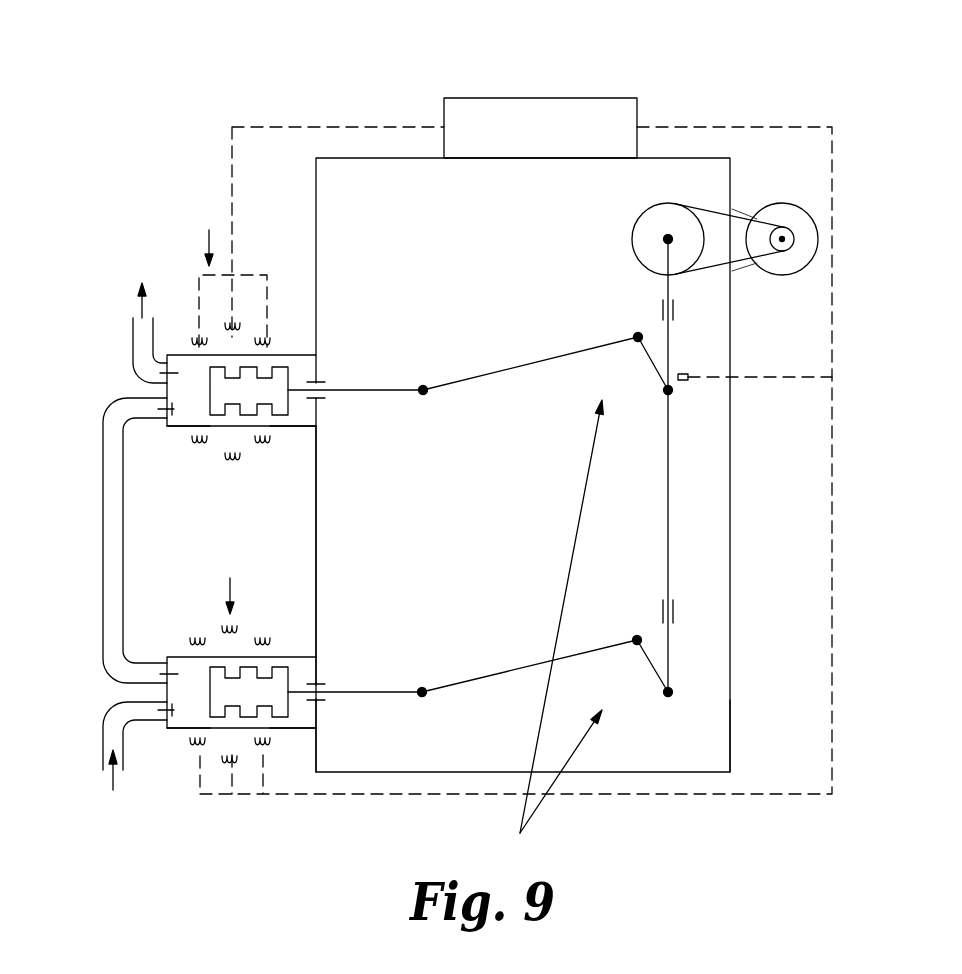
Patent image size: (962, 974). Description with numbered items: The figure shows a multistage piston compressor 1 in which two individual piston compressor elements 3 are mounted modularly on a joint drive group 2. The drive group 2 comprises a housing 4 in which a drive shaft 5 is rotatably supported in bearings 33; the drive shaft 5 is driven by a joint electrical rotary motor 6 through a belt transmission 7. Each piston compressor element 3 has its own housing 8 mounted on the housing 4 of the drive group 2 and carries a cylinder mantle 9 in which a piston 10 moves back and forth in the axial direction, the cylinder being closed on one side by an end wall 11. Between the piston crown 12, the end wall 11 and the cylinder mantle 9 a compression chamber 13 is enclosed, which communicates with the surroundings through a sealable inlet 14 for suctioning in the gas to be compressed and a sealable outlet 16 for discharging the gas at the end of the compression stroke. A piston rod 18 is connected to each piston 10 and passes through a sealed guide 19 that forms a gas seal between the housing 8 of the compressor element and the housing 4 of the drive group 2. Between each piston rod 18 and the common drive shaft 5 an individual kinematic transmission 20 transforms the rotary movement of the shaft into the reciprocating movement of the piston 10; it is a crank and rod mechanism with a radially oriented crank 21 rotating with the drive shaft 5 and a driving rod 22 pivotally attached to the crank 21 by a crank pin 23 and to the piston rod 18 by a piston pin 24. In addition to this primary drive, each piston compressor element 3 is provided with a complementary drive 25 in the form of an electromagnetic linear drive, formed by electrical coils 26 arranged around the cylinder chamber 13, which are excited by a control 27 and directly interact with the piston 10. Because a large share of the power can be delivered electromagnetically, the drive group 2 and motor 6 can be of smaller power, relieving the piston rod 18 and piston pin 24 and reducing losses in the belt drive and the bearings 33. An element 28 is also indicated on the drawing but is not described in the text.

The piston compressor 1 is at (792, 82).
The drive group 2 is at (738, 529).
The piston compressor element 3 is at (179, 342).
The housing 4 is at (732, 736).
The drive shaft 5 is at (690, 207).
The electrical rotary motor 6 is at (808, 255).
The belt transmission 7 is at (705, 267).
The housing 8 is at (178, 427).
The cylinder mantle 9 is at (285, 427).
The piston 10 is at (283, 365).
The end wall 11 is at (167, 393).
The piston crown 12 is at (167, 427).
The compression chamber 13 is at (192, 367).
The sealable inlet 14 is at (103, 740).
The sealable outlet 16 is at (133, 333).
The piston rod 18 is at (370, 390).
The sealed guide 19 is at (322, 383).
The kinematic transmission 20 is at (549, 632).
The crank 21 is at (655, 668).
The driving rod 22 is at (510, 668).
The crank pin 23 is at (638, 337).
The piston pin 24 is at (423, 390).
The complementary drive 25 is at (220, 409).
The electrical coils 26 is at (263, 448).
The control 27 is at (457, 98).
The sensor 28 is at (688, 376).
The bearings 33 is at (677, 307).